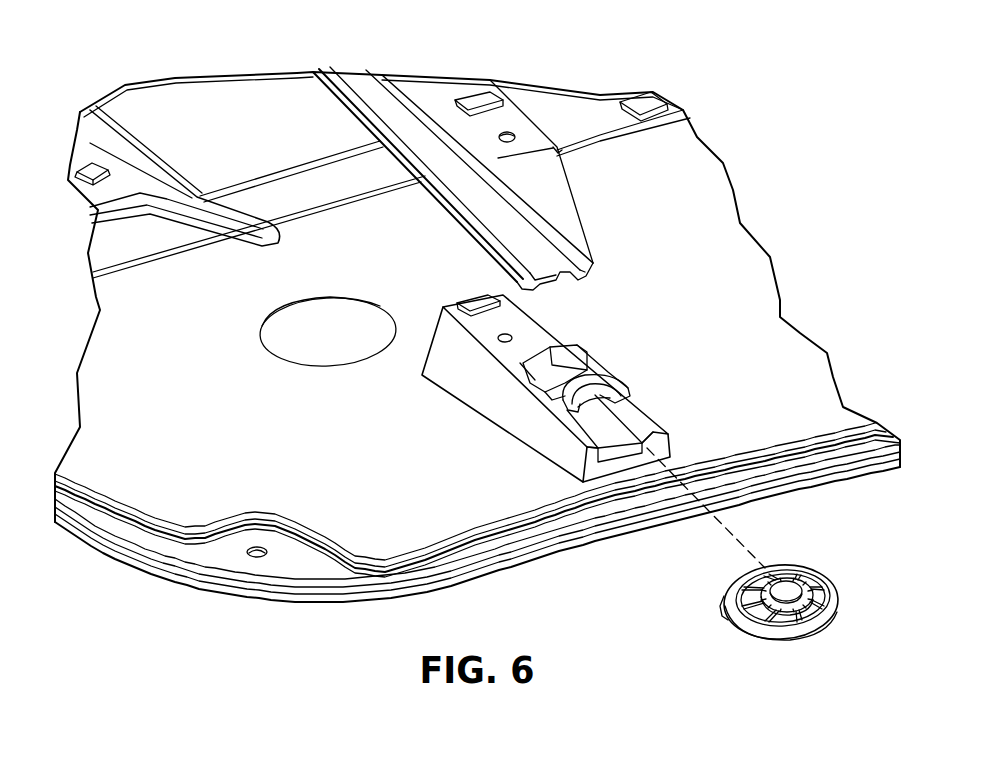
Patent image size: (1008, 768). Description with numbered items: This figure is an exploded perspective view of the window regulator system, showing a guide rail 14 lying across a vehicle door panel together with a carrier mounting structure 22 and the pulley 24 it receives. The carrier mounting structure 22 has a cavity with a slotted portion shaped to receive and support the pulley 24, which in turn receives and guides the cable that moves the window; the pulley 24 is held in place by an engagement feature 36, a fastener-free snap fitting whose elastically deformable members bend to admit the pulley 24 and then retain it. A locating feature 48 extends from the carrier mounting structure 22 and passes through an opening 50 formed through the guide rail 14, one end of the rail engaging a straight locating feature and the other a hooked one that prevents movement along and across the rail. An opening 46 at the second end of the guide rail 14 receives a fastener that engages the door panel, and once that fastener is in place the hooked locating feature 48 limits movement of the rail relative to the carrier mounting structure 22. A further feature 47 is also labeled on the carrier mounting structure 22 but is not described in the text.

The guide rail 14 is at (395, 115).
The opening 50 is at (463, 110).
The opening 46 is at (509, 133).
The locating feature 48 is at (473, 304).
The hole 47 is at (494, 341).
The engagement feature 36 is at (616, 358).
The carrier mounting structure 22 is at (640, 428).
The pulley 24 is at (833, 595).